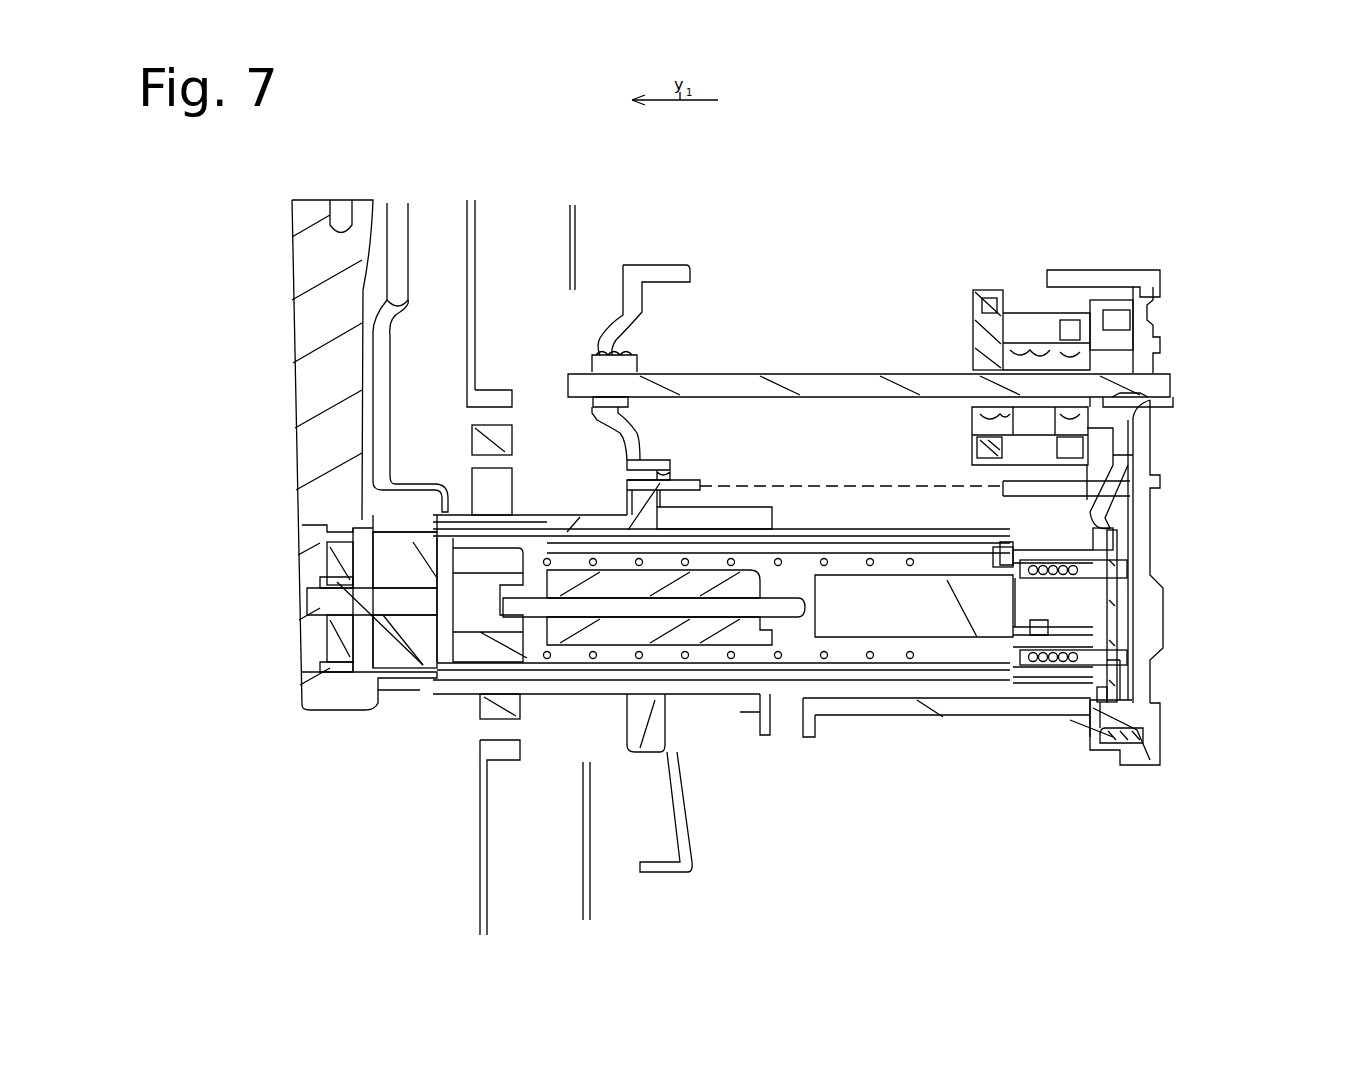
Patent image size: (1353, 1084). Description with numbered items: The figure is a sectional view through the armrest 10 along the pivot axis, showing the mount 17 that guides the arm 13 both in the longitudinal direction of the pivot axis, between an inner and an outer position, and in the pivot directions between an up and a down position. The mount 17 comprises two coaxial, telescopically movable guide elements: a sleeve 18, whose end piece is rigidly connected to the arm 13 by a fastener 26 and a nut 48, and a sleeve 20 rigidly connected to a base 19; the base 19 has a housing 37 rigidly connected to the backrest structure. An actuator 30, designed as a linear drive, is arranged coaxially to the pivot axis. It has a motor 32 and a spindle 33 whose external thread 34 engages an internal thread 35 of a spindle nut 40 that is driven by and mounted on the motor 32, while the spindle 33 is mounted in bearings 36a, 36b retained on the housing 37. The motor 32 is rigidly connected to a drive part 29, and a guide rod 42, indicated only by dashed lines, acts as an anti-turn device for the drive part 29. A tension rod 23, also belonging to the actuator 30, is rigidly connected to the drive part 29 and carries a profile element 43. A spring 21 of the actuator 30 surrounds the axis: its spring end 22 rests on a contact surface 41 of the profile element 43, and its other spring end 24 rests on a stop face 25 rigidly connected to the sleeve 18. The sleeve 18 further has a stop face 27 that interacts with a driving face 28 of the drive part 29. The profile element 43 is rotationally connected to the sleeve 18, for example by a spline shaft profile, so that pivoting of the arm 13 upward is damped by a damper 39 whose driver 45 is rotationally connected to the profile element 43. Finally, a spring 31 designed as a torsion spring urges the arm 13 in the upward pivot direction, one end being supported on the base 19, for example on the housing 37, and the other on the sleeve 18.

The armrest 10 is at (1178, 222).
The arm 13 is at (325, 385).
The mount 17 is at (475, 700).
The sleeve 18 is at (400, 685).
The base 19 is at (742, 300).
The sleeve 20 is at (567, 507).
The spring 21 is at (787, 548).
The spring end 22 is at (552, 697).
The tension rod 23 is at (848, 592).
The spring end 24 is at (875, 660).
The stop face 25 is at (880, 658).
The fastener 26 is at (357, 602).
The stop face 27 is at (1163, 560).
The driving face 28 is at (1093, 683).
The drive part 29 is at (1120, 510).
The actuator 30 is at (1192, 338).
The spring 31 is at (1045, 655).
The motor 32 is at (1037, 323).
The spindle 33 is at (822, 374).
The external thread 34 is at (898, 374).
The internal thread 35 is at (1085, 407).
The bearing 36a is at (587, 352).
The bearing 36b is at (1168, 373).
The housing 37 is at (672, 270).
The damper 39 is at (690, 635).
The spindle nut 40 is at (1043, 360).
The contact surface 41 is at (560, 645).
The guide rod 42 is at (815, 483).
The profile element 43 is at (468, 546).
The driver 45 is at (537, 690).
The nut 48 is at (397, 565).